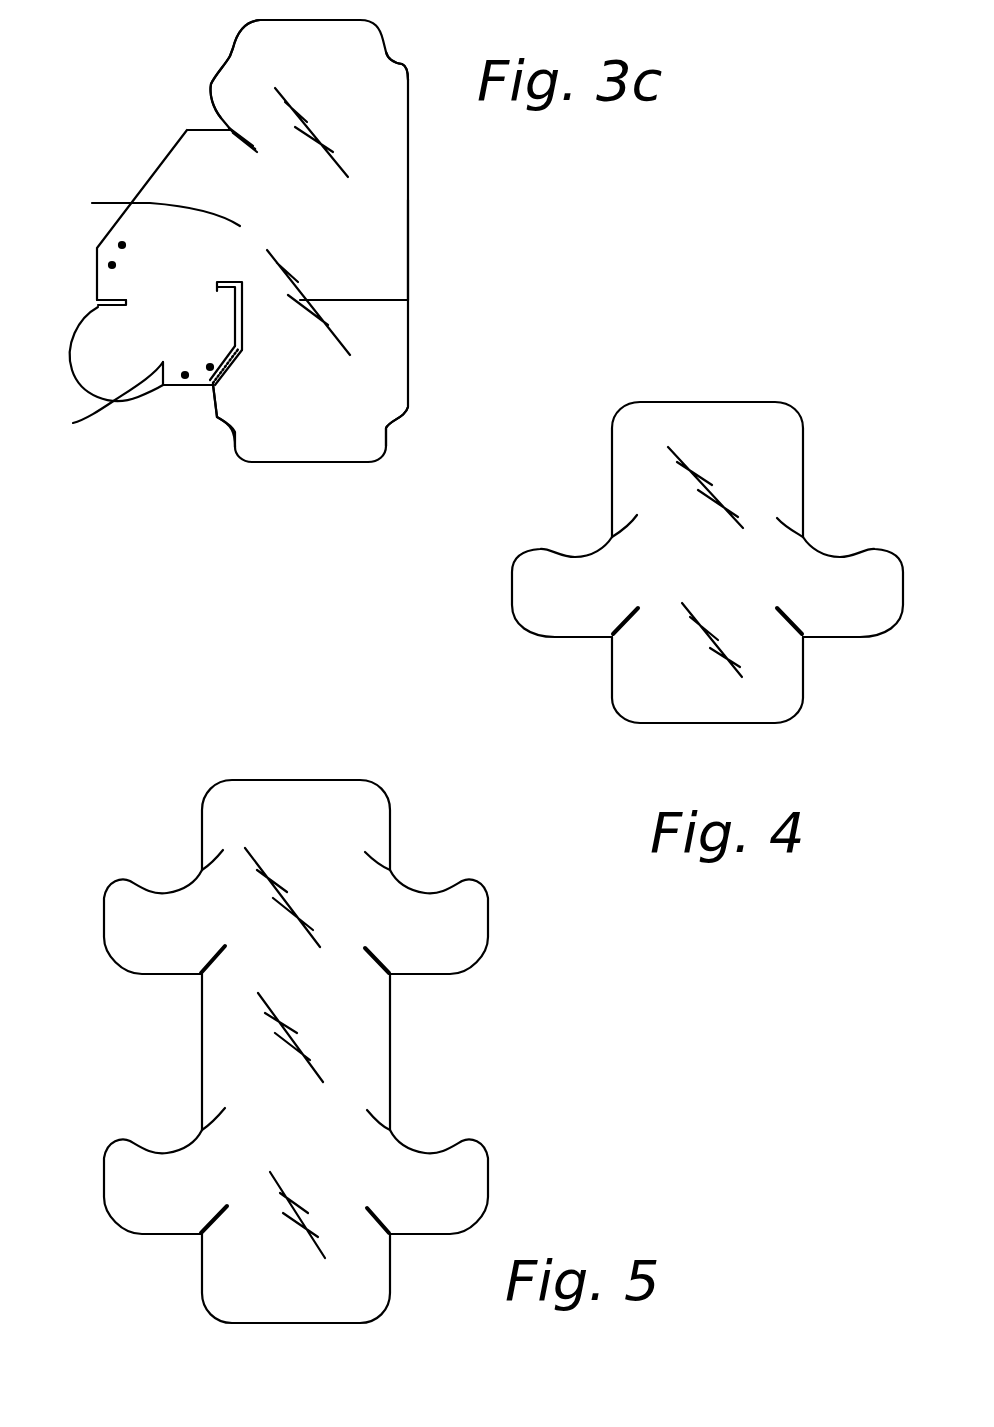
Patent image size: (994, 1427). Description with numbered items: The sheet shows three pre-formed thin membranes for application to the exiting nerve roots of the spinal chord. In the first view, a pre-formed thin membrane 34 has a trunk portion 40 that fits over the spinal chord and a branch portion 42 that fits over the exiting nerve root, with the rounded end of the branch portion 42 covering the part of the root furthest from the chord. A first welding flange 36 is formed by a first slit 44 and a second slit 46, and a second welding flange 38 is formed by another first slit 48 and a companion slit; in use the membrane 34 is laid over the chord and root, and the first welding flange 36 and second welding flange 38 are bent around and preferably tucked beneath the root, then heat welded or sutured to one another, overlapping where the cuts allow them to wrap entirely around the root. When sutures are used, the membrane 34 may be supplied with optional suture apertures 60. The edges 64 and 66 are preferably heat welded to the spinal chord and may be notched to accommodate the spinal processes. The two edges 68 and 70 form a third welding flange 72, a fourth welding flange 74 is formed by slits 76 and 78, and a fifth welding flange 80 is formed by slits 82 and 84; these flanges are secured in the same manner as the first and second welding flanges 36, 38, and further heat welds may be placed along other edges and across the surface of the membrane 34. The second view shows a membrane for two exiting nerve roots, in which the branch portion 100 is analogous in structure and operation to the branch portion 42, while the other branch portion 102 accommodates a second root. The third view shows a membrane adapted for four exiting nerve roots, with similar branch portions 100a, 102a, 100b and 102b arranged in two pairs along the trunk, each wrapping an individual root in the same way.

In FIG. 3C, the pre-formed thin membrane 34 is at (408, 190).
In FIG. 3C, the first welding flange 36 is at (186, 387).
In FIG. 3C, the second welding flange 38 is at (148, 185).
In FIG. 3C, the trunk portion 40 is at (318, 312).
In FIG. 3C, the branch portion 42 is at (149, 205).
In FIG. 3C, the first slit 44 is at (74, 423).
In FIG. 3C, the second slit 46 is at (236, 297).
In FIG. 3C, the first slit 48 is at (143, 271).
In FIG. 3C, the suture apertures 60 is at (84, 263).
In FIG. 3C, the edge 64 is at (350, 20).
In FIG. 3C, the edge 66 is at (325, 465).
In FIG. 3C, the edge 68 is at (408, 62).
In FIG. 3C, the edge 70 is at (405, 413).
In FIG. 3C, the third welding flange 72 is at (408, 232).
In FIG. 3C, the fourth welding flange 74 is at (208, 83).
In FIG. 3C, the slit 76 is at (228, 57).
In FIG. 3C, the slit 78 is at (218, 118).
In FIG. 3C, the fifth welding flange 80 is at (215, 400).
In FIG. 3C, the slit 82 is at (234, 357).
In FIG. 3C, the slit 84 is at (226, 428).
In FIG. 4, the branch portion 100 is at (615, 582).
In FIG. 4, the branch portion 102 is at (830, 590).
In FIG. 5, the branch portion 100a is at (175, 910).
In FIG. 5, the branch portion 102a is at (447, 920).
In FIG. 5, the branch portion 100b is at (150, 1165).
In FIG. 5, the lower right wing flap 102b is at (453, 1165).